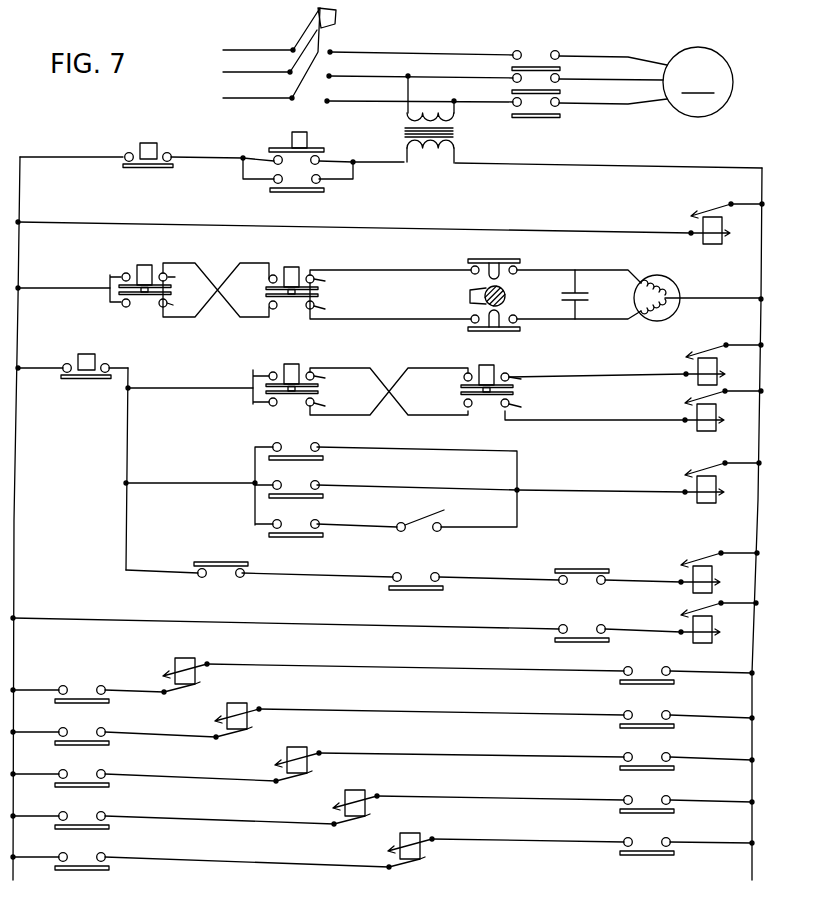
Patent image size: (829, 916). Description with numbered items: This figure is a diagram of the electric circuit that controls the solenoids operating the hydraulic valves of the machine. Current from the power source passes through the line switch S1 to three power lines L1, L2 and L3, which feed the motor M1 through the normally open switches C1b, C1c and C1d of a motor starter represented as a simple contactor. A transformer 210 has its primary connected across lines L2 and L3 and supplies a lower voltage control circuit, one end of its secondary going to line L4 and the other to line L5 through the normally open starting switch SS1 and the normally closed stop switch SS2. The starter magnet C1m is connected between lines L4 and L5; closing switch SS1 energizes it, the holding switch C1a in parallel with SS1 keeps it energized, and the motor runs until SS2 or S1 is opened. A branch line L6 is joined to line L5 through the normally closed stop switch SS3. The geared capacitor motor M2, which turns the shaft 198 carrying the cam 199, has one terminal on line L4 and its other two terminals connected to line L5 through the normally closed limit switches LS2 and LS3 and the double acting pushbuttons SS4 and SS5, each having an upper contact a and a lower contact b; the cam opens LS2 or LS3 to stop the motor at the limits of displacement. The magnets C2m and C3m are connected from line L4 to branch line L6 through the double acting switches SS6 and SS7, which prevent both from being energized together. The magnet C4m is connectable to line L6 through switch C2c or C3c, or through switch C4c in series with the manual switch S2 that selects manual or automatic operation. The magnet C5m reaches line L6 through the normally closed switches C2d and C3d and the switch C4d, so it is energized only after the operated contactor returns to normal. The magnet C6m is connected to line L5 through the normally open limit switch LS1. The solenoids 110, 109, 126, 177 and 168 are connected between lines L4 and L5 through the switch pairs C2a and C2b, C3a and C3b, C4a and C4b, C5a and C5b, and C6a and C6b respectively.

The power line L1 is at (392, 50).
The power line L2 is at (395, 76).
The power line L3 is at (392, 101).
The control circuit side line L4 is at (702, 167).
The control circuit side line L5 is at (70, 157).
The branch line L6 is at (127, 417).
The line switch S1 is at (279, 32).
The manual switch S2 is at (422, 527).
The starting switch SS1 is at (300, 133).
The stop switch SS2 is at (158, 142).
The stop switch SS3 is at (86, 356).
The pushbutton starting switch SS4 is at (143, 264).
The pushbutton starting switch SS5 is at (291, 267).
The double acting starting switch SS6 is at (282, 364).
The double acting starting switch SS7 is at (488, 366).
The motor starter holding switch C1a is at (324, 190).
The motor starter switch C1b is at (561, 69).
The motor starter switch C1c is at (561, 92).
The motor starter switch C1d is at (561, 116).
The motor starter magnet C1m is at (699, 229).
The contactor switch C2a is at (674, 684).
The contactor switch C2b is at (108, 704).
The contactor switch C2c is at (320, 461).
The contactor switch C2d is at (583, 569).
The contactor magnet C2m is at (687, 368).
The contactor switch C3a is at (674, 728).
The contactor switch C3b is at (108, 746).
The contactor switch C3c is at (320, 499).
The contactor switch C3d is at (200, 560).
The contactor magnet C3m is at (688, 413).
The contactor switch C4a is at (674, 770).
The contactor switch C4b is at (108, 788).
The contactor switch C4c is at (320, 537).
The contactor switch C4d is at (416, 593).
The contactor magnet C4m is at (690, 483).
The contactor switch C5a is at (674, 813).
The contactor switch C5b is at (108, 830).
The contactor magnet C5m is at (688, 567).
The contactor switch C6a is at (674, 855).
The contactor switch C6b is at (108, 871).
The contactor magnet C6m is at (687, 622).
The limit switch LS1 is at (560, 641).
The limit switch LS2 is at (516, 259).
The limit switch LS3 is at (503, 332).
The motor M1 is at (698, 82).
The geared capacitor motor M2 is at (677, 279).
The shaft 198 is at (505, 297).
The cam 199 is at (470, 296).
The transformer 210 is at (463, 136).
The solenoid 110 is at (200, 677).
The solenoid 109 is at (255, 721).
The solenoid 126 is at (312, 766).
The solenoid 177 is at (370, 810).
The solenoid 168 is at (425, 852).